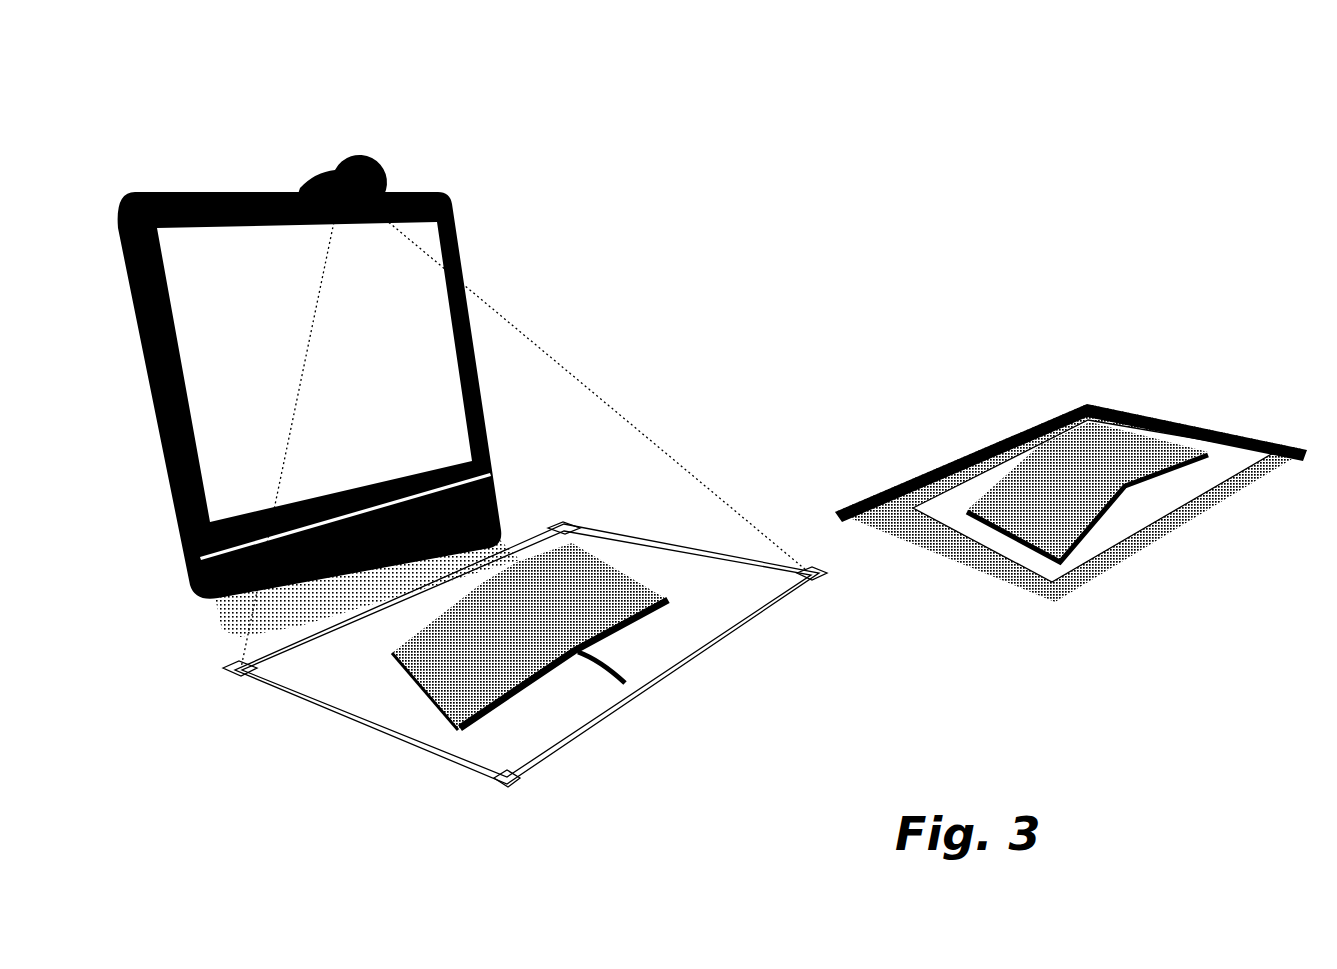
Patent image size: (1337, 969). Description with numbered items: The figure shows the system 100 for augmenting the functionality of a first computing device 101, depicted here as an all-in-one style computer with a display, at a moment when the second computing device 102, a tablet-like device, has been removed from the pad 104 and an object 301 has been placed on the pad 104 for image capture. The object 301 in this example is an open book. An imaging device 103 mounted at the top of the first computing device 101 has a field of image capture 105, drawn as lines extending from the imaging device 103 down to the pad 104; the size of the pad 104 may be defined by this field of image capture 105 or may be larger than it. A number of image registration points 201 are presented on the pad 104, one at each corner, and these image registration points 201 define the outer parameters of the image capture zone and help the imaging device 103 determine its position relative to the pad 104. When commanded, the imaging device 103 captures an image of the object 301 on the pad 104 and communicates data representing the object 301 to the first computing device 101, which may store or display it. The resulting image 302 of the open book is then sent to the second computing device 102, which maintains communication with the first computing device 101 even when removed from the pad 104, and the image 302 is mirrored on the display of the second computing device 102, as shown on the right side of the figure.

The system 100 is at (1214, 150).
The first computing device 101 is at (208, 273).
The second computing device 102 is at (922, 508).
The imaging device 103 is at (348, 163).
The pad 104 is at (718, 616).
The field of image capture 105 is at (611, 412).
The image registration points 201 is at (567, 523).
The object 301 is at (492, 647).
The image 302 is at (1093, 463).